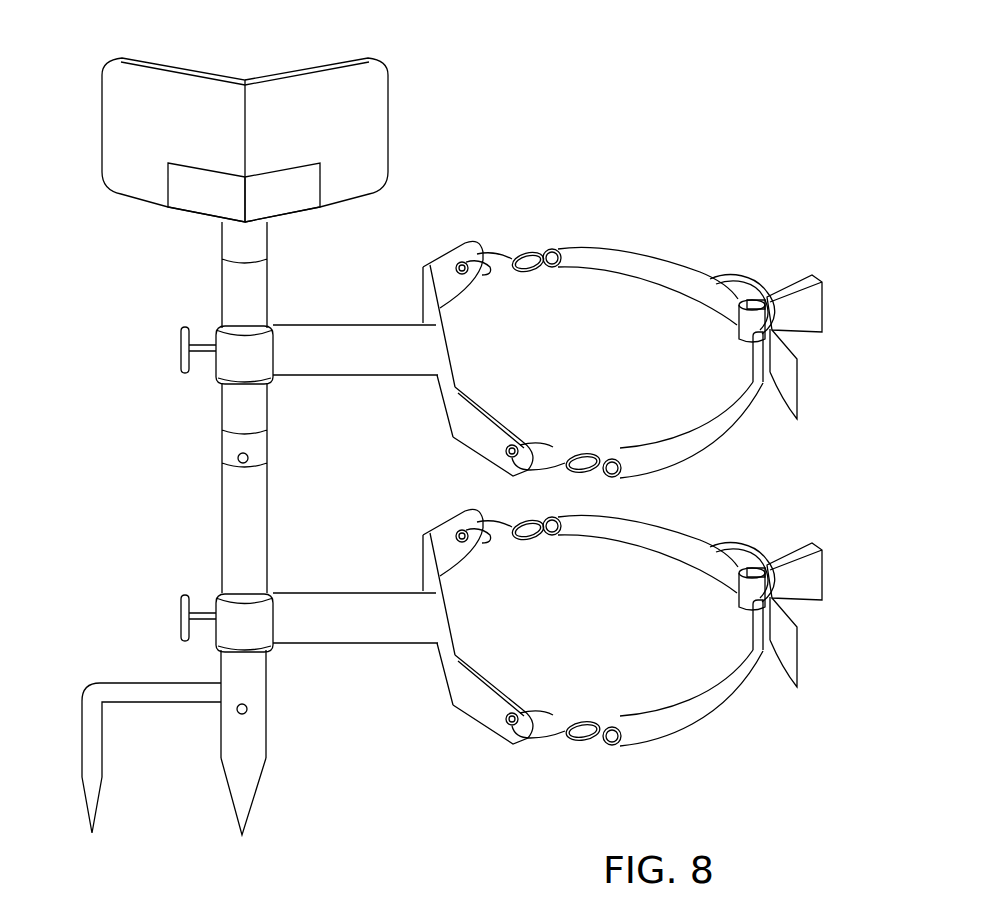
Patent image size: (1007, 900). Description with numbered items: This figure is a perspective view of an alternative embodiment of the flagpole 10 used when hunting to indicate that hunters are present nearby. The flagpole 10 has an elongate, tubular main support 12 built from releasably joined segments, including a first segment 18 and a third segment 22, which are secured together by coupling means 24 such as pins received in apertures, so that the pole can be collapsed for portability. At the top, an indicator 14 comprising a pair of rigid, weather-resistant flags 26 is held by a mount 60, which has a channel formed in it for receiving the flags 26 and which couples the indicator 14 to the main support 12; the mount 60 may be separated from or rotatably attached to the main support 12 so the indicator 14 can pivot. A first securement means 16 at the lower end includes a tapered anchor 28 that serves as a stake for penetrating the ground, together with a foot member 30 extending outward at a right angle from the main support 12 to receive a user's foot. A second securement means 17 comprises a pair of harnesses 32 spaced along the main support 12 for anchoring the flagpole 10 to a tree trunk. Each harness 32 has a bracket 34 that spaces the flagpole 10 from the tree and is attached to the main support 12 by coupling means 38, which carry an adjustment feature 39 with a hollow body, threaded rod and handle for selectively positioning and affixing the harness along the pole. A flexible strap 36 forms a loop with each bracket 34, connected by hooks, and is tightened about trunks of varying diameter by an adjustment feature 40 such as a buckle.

The flagpole 10 is at (532, 42).
The main support 12 is at (214, 292).
The indicator 14 is at (114, 142).
The first securement means 16 is at (254, 742).
The second securement means 17 is at (826, 272).
The first segment 18 is at (225, 514).
The third segment 22 is at (223, 228).
The coupling means 24 is at (252, 460).
The flags 26 is at (176, 140).
The anchor 28 is at (242, 793).
The foot member 30 is at (92, 756).
The harnesses 32 is at (677, 292).
The bracket 34 is at (353, 345).
The strap 36 is at (693, 447).
The coupling means 38 is at (228, 373).
The adjustment feature 39 is at (181, 349).
The adjustment feature 40 is at (787, 337).
The mount 60 is at (283, 215).